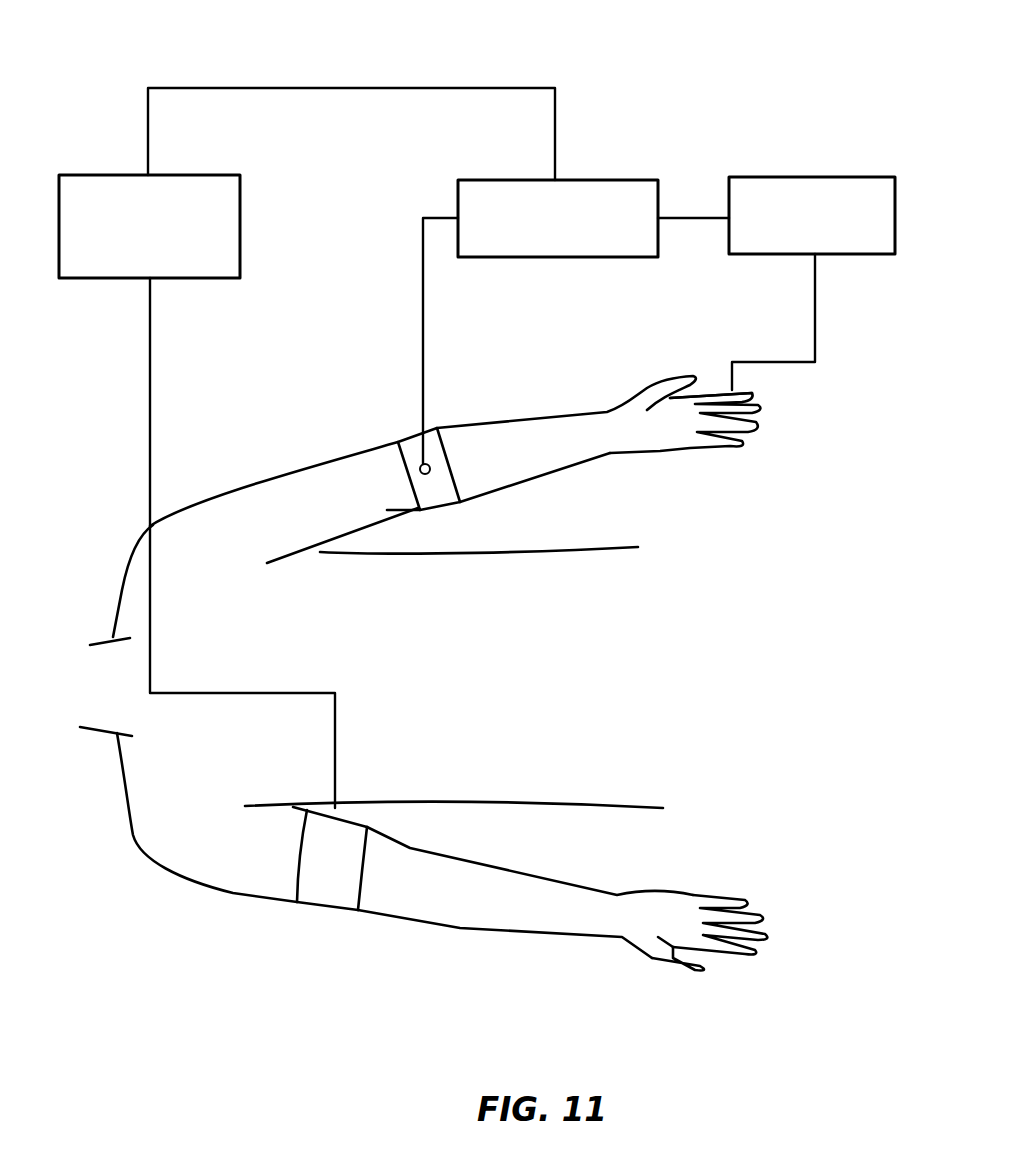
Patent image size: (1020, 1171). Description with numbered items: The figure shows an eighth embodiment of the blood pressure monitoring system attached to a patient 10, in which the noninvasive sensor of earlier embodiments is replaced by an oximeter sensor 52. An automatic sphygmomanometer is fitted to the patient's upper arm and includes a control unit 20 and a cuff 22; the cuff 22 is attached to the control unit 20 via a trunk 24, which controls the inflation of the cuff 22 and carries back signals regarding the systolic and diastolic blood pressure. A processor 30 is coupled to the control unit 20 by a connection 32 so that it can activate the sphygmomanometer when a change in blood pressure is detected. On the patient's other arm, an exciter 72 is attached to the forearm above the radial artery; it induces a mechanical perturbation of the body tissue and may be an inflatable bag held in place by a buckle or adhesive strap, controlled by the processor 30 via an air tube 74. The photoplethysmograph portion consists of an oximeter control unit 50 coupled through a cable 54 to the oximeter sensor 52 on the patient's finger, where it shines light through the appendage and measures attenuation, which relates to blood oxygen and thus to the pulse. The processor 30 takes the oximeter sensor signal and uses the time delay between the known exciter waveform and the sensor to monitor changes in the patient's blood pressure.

The patient 10 is at (122, 590).
The control unit 20 is at (192, 175).
The cuff 22 is at (363, 823).
The trunk 24 is at (335, 712).
The processor 30 is at (592, 180).
The connection line 32 is at (517, 88).
The oximeter control unit 50 is at (848, 177).
The oximeter sensor 52 is at (727, 388).
The cable 54 is at (815, 305).
The exciter 72 is at (408, 436).
The air tube 74 is at (420, 273).